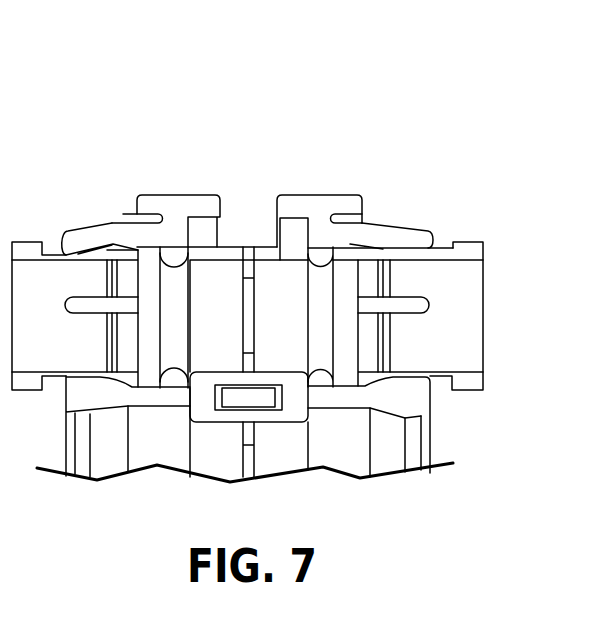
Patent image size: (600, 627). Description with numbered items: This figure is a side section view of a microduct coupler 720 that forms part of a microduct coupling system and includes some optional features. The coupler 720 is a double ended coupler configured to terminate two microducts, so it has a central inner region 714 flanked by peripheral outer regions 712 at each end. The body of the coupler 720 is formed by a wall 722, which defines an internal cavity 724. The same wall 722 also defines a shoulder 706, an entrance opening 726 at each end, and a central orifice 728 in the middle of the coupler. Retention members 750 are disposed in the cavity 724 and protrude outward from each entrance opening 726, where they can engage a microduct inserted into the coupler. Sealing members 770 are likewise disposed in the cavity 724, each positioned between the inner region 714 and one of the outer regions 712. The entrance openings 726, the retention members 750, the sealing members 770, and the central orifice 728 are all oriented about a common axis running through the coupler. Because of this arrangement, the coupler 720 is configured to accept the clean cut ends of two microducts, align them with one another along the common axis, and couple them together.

The microduct coupler 720 is at (198, 68).
The wall 722 is at (113, 238).
The central inner region 714 is at (204, 234).
The shoulder 706 is at (244, 262).
The central orifice 728 is at (250, 311).
The entrance opening 726 is at (437, 247).
The retention member 750 is at (461, 278).
The cavity 724 is at (213, 342).
The sealing member 770 is at (323, 384).
The peripheral outer region 712 is at (398, 403).